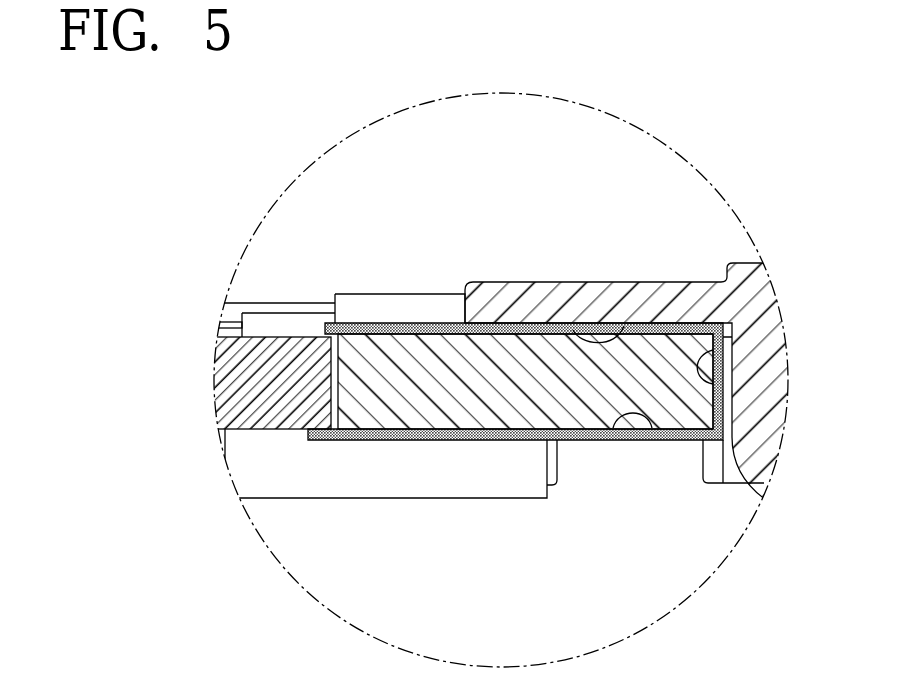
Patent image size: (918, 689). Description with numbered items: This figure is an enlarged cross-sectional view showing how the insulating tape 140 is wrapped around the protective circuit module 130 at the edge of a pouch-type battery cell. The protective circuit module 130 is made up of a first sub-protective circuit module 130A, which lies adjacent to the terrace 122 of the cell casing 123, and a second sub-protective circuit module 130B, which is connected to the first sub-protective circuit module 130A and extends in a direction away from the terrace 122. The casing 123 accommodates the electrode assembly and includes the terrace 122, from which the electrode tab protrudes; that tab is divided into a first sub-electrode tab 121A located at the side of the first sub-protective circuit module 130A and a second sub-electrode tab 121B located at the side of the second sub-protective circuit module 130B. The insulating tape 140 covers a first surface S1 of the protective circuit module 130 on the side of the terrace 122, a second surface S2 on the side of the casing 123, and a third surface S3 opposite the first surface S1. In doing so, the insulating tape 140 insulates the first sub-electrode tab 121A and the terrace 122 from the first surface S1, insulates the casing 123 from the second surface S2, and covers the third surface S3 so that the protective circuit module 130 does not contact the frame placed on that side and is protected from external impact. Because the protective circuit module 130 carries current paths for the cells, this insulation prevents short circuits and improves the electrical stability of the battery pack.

The first sub-electrode tab 121A is at (406, 303).
The second sub-electrode tab 121B is at (230, 322).
The terrace 122 is at (678, 298).
The casing 123 is at (760, 443).
The protective circuit module 130 is at (295, 509).
The first sub-protective circuit module 130A is at (435, 395).
The second sub-protective circuit module 130B is at (228, 383).
The insulating tape 140 is at (670, 440).
The first surface S1 is at (625, 323).
The second surface S2 is at (700, 385).
The third surface S3 is at (614, 440).